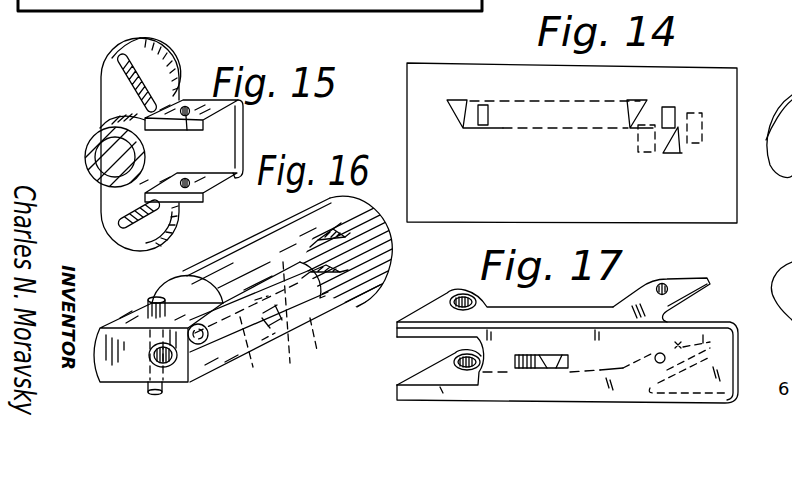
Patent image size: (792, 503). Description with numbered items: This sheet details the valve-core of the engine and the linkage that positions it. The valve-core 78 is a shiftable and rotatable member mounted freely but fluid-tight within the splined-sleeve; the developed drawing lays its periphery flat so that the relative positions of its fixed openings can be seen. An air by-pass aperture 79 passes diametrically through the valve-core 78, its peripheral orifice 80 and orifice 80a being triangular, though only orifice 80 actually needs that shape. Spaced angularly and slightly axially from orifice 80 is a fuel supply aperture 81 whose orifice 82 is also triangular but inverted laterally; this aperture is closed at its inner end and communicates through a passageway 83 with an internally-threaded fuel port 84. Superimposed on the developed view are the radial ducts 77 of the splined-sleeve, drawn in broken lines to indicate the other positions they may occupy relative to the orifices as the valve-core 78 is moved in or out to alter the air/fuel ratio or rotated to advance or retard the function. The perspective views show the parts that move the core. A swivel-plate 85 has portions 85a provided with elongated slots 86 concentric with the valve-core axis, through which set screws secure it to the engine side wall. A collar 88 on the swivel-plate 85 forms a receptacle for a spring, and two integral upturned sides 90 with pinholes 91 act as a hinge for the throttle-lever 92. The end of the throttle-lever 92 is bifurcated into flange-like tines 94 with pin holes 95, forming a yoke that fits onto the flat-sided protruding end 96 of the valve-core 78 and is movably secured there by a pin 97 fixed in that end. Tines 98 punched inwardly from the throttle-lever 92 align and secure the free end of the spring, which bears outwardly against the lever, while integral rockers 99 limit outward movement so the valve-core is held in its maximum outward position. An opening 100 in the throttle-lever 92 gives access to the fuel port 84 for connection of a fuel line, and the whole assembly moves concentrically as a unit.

In FIG. 14, the radial ducts 77 is at (482, 127).
In FIG. 14, the valve-core 78 is at (572, 214).
In FIG. 16, the valve-core 78 is at (388, 237).
In FIG. 14, the air by-pass aperture 79 is at (555, 114).
In FIG. 16, the air by-pass aperture 79 is at (328, 238).
In FIG. 14, the orifice 80 is at (636, 103).
In FIG. 16, the orifice 80 is at (347, 221).
In FIG. 14, the orifice 80a is at (454, 100).
In FIG. 16, the orifice 80a is at (280, 336).
In FIG. 16, the fuel supply aperture 81 is at (328, 308).
In FIG. 14, the orifice 82 is at (673, 157).
In FIG. 16, the orifice 82 is at (312, 268).
In FIG. 16, the passageway 83 is at (182, 347).
In FIG. 16, the fuel port 84 is at (168, 372).
In FIG. 15, the swivel-plate 85 is at (101, 108).
In FIG. 15, the swivel-plate portions 85a is at (138, 40).
In FIG. 15, the elongated slots 86 is at (124, 77).
In FIG. 15, the collar 88 is at (98, 142).
In FIG. 15, the upturned sides 90 is at (217, 200).
In FIG. 15, the pinholes 91 is at (197, 93).
In FIG. 17, the pinholes 91 is at (669, 272).
In FIG. 17, the throttle-lever 92 is at (570, 313).
In FIG. 17, the tines 94 is at (420, 379).
In FIG. 17, the pin holes 95 is at (446, 294).
In FIG. 16, the protruding end 96 is at (140, 325).
In FIG. 16, the pin 97 is at (150, 305).
In FIG. 17, the tines 98 is at (565, 357).
In FIG. 17, the rockers 99 is at (686, 284).
In FIG. 17, the opening 100 is at (442, 363).